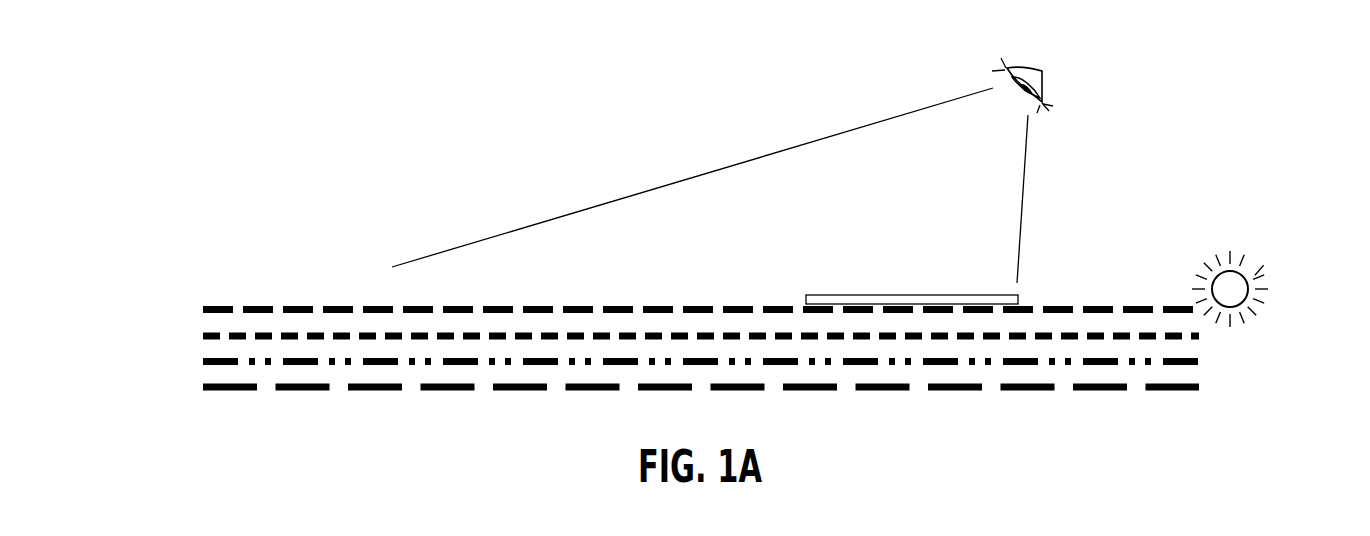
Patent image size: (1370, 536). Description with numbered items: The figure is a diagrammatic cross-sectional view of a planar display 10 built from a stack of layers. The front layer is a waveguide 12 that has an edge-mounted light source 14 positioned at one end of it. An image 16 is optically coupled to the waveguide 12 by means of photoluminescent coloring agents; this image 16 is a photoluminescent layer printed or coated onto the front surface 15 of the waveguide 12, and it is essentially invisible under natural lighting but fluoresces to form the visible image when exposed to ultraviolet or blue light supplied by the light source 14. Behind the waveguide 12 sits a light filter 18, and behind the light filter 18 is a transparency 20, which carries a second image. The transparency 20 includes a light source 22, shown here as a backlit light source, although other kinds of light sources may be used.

The display 10 is at (1287, 199).
The waveguide 12 is at (203, 307).
The edge-mounted light source 14 is at (1243, 276).
The front surface 15 is at (542, 306).
The image 16 is at (1018, 300).
The light filter 18 is at (203, 335).
The transparency 20 is at (203, 360).
The light source 22 is at (203, 388).